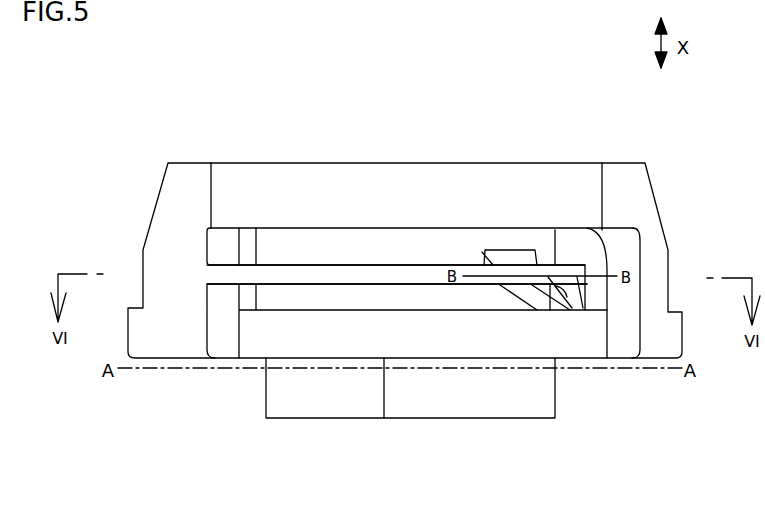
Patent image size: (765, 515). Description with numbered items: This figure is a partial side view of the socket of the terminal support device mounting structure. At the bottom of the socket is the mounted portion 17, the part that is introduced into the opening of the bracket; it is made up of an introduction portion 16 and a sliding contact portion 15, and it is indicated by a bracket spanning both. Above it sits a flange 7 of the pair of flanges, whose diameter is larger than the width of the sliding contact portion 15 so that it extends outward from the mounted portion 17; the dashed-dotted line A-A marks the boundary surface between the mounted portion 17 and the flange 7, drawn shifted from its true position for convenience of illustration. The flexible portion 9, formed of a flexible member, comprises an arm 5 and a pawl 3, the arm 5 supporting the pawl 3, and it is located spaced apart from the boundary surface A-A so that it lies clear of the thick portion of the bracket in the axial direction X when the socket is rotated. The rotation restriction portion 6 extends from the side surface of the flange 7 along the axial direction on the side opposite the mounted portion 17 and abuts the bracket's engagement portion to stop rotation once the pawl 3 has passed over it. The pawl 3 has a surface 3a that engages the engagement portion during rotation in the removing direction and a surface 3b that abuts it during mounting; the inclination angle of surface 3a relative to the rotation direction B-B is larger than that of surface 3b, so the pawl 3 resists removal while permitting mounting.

The pawl 3 is at (550, 285).
The surface of pawl 3a is at (586, 282).
The surface of pawl 3b is at (533, 312).
The arm 5 is at (427, 272).
The rotation restriction portion 6 is at (620, 308).
The flange 7 is at (254, 330).
The flexible portion 9 is at (485, 112).
The sliding contact portion 15 is at (355, 387).
The introduction portion 16 is at (469, 407).
The mounted portion 17 is at (410, 430).